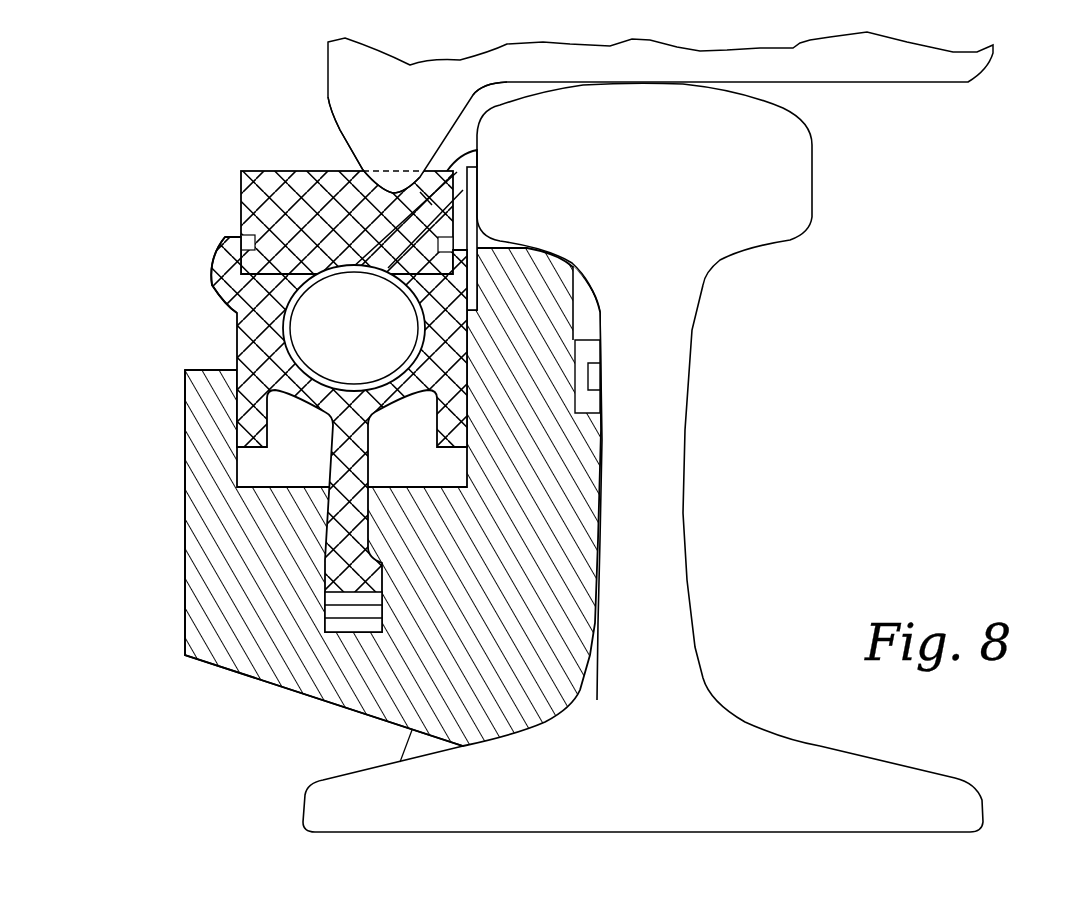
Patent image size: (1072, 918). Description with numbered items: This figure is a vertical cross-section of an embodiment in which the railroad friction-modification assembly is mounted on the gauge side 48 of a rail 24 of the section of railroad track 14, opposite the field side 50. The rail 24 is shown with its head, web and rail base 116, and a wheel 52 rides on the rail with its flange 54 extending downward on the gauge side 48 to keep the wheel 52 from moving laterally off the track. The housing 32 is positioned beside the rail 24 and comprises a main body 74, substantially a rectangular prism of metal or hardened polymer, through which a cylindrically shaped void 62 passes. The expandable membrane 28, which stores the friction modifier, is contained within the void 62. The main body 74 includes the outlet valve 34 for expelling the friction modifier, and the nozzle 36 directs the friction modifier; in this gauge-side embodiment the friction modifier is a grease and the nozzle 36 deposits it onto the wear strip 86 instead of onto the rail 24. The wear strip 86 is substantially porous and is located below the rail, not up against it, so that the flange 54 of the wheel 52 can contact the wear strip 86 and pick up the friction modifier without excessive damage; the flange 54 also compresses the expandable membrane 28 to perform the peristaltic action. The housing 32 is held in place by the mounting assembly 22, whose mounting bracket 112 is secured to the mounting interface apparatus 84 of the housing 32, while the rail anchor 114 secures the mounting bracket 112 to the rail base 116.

The section of railroad track 14 is at (681, 463).
The field side 50 is at (848, 208).
The rail 24 is at (650, 575).
The rail base 116 is at (923, 811).
The mounting assembly 22 is at (338, 444).
The mounting bracket 112 is at (205, 622).
The rail anchor 114 is at (417, 742).
The nozzle 36 is at (478, 150).
The housing 32 is at (280, 397).
The wear strip 86 is at (319, 218).
The outlet valve 34 is at (385, 237).
The void 62 is at (296, 434).
The main body 74 is at (213, 277).
The expandable membrane 28 is at (310, 352).
The mounting interface apparatus 84 is at (347, 473).
The gauge side 48 is at (475, 95).
The wheel 52 is at (643, 109).
The flange 54 is at (385, 147).